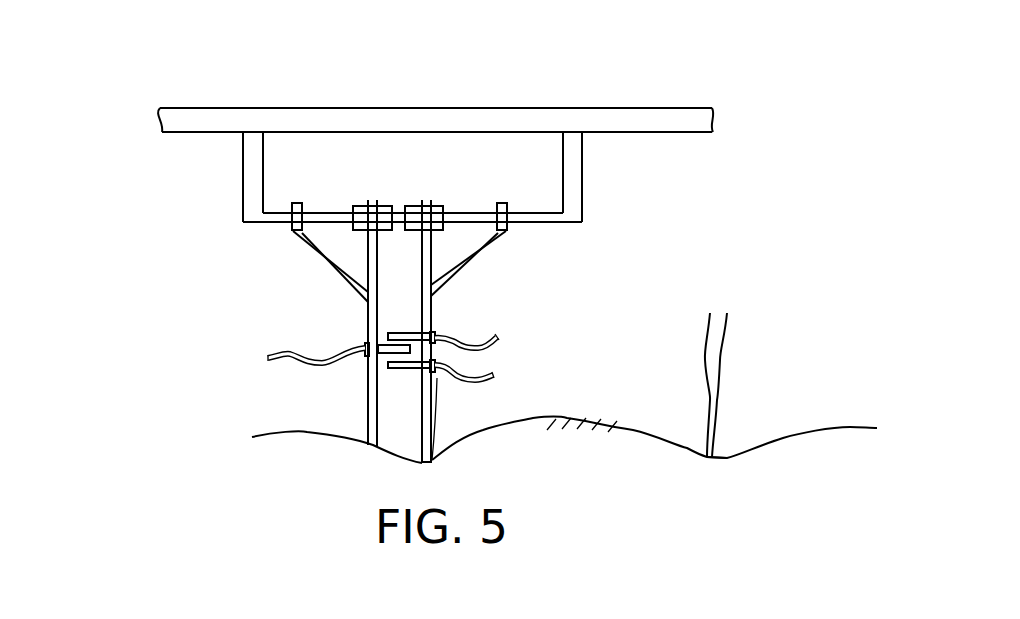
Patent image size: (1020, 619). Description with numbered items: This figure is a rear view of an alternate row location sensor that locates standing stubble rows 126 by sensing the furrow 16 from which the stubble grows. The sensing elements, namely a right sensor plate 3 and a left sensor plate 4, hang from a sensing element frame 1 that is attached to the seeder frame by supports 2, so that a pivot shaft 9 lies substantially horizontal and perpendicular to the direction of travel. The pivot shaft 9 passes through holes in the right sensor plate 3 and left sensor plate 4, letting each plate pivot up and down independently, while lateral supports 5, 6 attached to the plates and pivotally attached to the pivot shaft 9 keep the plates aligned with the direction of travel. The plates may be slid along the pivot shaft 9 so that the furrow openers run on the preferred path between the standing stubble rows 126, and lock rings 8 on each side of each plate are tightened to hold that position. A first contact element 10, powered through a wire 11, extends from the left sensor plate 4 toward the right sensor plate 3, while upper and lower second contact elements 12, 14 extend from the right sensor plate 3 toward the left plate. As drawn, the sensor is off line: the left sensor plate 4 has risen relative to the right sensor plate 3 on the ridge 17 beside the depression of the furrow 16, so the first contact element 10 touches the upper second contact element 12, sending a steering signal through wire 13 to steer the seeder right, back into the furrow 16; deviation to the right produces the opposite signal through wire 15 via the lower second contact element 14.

The sensing element frame 1 is at (434, 107).
The support legs 2 is at (264, 165).
The right sensor plate 3 is at (427, 403).
The left sensor plate 4 is at (368, 395).
The lateral support 5 is at (468, 272).
The lateral support 6 is at (328, 270).
The lock rings 8 is at (391, 206).
The pivot shaft 9 is at (540, 222).
The first contact element 10 is at (378, 345).
The wire 11 is at (322, 357).
The upper second contact element 12 is at (402, 333).
The wire 13 is at (450, 335).
The lower second contact element 14 is at (400, 368).
The lower right hose 15 is at (468, 375).
The furrow 16 is at (427, 463).
The ridge 17 is at (597, 418).
The standing stubble rows 126 is at (432, 460).